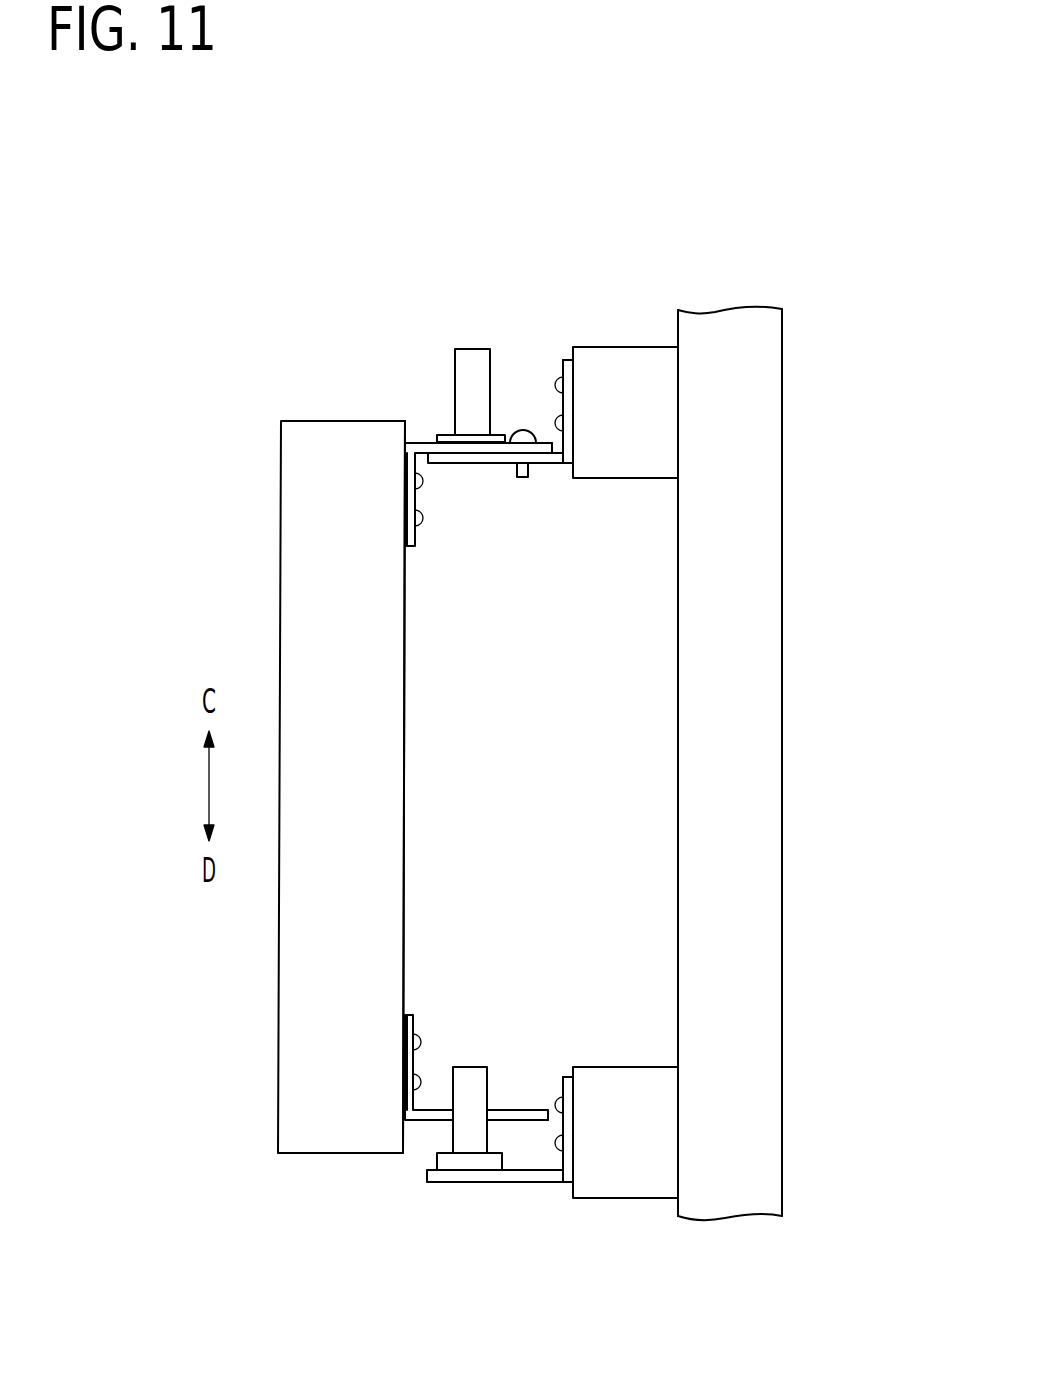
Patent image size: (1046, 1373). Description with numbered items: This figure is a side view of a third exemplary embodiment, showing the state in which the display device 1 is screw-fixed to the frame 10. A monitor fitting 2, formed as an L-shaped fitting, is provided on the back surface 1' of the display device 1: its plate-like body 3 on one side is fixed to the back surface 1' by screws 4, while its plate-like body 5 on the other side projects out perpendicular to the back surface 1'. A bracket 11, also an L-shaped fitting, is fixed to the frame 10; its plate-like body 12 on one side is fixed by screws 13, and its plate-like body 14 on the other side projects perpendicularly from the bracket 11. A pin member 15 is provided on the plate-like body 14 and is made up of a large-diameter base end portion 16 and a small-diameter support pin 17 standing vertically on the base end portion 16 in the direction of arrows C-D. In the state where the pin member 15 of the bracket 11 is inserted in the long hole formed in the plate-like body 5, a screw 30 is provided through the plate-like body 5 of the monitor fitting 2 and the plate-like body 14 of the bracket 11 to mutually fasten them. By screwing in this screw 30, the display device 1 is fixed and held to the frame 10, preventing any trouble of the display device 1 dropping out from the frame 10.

The display device 1 is at (310, 787).
The back surface 1' is at (436, 787).
The monitor fitting 2 is at (393, 792).
The plate-like body 3 is at (407, 495).
The screw 4 is at (422, 481).
The plate-like body 5 is at (420, 443).
The frame 10 is at (760, 740).
The bracket 11 is at (505, 809).
The plate-like body 12 is at (568, 408).
The screw 13 is at (556, 426).
The plate-like body 14 is at (498, 465).
The pin member 15 is at (458, 734).
The base end portion 16 is at (467, 437).
The support pin 17 is at (473, 358).
The screw 30 is at (525, 432).